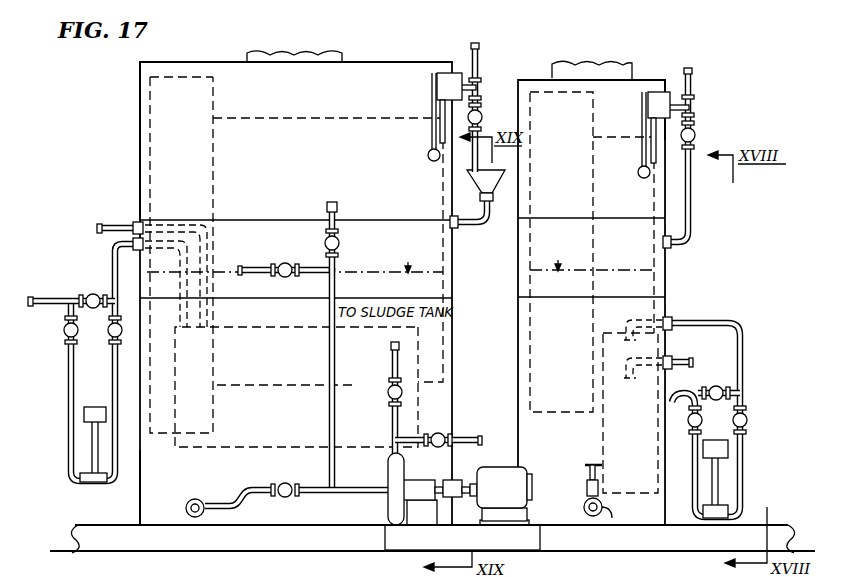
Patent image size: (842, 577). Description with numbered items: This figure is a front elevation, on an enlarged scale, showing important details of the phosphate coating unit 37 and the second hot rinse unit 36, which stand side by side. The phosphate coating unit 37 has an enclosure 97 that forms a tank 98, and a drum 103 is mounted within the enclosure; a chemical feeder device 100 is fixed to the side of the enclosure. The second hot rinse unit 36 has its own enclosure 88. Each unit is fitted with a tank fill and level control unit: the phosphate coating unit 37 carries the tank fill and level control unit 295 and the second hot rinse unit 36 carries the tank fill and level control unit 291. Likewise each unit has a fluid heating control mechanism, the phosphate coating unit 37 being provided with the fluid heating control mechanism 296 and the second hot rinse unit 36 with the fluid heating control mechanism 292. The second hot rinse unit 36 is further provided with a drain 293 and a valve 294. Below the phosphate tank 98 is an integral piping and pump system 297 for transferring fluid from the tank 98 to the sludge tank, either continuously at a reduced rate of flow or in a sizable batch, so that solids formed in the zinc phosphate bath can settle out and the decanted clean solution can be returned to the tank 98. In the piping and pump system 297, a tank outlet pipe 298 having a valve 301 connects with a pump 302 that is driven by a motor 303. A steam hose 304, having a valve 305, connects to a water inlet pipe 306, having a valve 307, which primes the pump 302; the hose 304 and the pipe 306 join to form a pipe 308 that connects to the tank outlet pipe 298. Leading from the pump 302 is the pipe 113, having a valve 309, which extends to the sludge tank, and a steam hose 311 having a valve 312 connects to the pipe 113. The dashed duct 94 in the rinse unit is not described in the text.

The phosphate coating unit 37 is at (438, 57).
The second hot rinse unit 36 is at (682, 53).
The enclosure 97 is at (140, 95).
The tank 98 is at (150, 499).
The enclosure 88 is at (665, 80).
The drum 103 is at (328, 117).
The heating duct 94 is at (588, 111).
The tank fill and level control unit 295 is at (424, 82).
The tank fill and level control unit 291 is at (706, 78).
The chemical feeder device 100 is at (498, 186).
The fluid heating control mechanism 296 is at (68, 425).
The fluid heating control mechanism 292 is at (751, 345).
The steam hose 304 is at (245, 268).
The valve 305 is at (285, 262).
The water inlet pipe 306 is at (331, 227).
The valve 307 is at (345, 243).
The pipe 308 is at (329, 361).
The pipe 113 is at (390, 358).
The valve 309 is at (388, 390).
The steam hose 311 is at (474, 437).
The valve 312 is at (441, 432).
The integral piping and pump system 297 is at (387, 443).
The tank outlet pipe 298 is at (218, 500).
The valve 301 is at (285, 480).
The pump 302 is at (393, 470).
The motor 303 is at (500, 478).
The valve 294 is at (593, 466).
The drain 293 is at (606, 519).